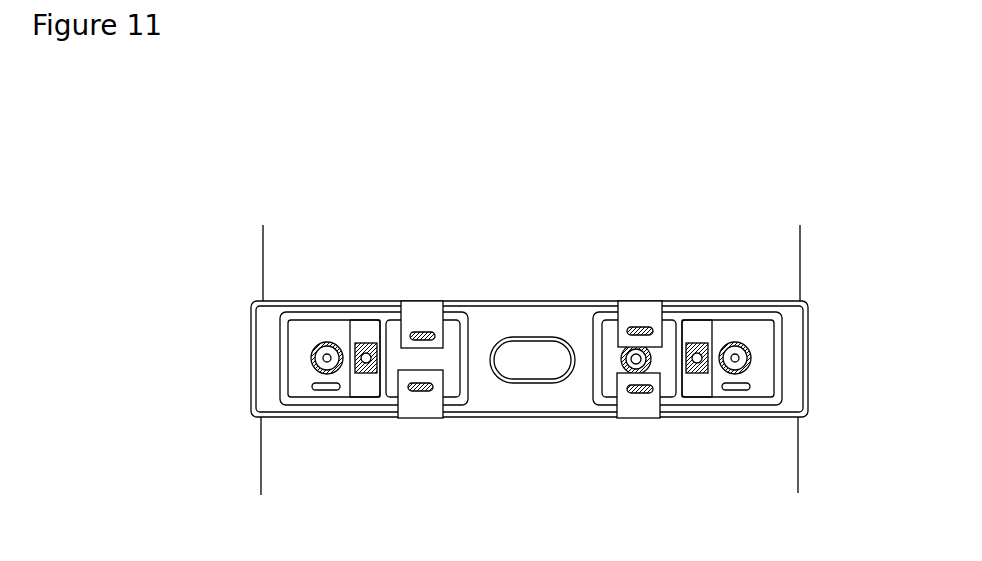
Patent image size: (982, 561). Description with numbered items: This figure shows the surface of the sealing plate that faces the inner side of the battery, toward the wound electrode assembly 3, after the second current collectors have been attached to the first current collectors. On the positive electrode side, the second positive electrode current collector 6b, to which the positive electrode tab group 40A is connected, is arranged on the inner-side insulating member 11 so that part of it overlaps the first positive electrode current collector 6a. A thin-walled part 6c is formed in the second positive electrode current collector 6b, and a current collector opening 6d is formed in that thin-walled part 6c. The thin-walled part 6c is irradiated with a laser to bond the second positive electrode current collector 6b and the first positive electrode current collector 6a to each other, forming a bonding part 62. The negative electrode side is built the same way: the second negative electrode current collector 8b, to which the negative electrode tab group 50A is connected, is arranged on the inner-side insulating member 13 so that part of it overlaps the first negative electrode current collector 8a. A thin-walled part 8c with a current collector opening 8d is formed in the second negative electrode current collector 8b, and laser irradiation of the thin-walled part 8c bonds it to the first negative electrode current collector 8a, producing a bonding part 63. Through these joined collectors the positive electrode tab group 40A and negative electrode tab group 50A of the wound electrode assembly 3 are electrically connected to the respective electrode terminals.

The wound electrode assembly 3 is at (780, 256).
The inner-side insulating member 11 is at (778, 382).
The inner-side insulating member 13 is at (282, 394).
The first negative electrode current collector 8a is at (318, 334).
The second negative electrode current collector 8b is at (446, 355).
The thin-walled part 8c is at (353, 393).
The current collector opening 8d is at (368, 328).
The first positive electrode current collector 6a is at (752, 338).
The second positive electrode current collector 6b is at (613, 360).
The thin-walled part 6c is at (690, 397).
The current collector opening 6d is at (700, 348).
The bonding part 62 is at (700, 378).
The bonding part 63 is at (372, 376).
The negative electrode tab group 50A is at (421, 318).
The positive electrode tab group 40A is at (638, 320).